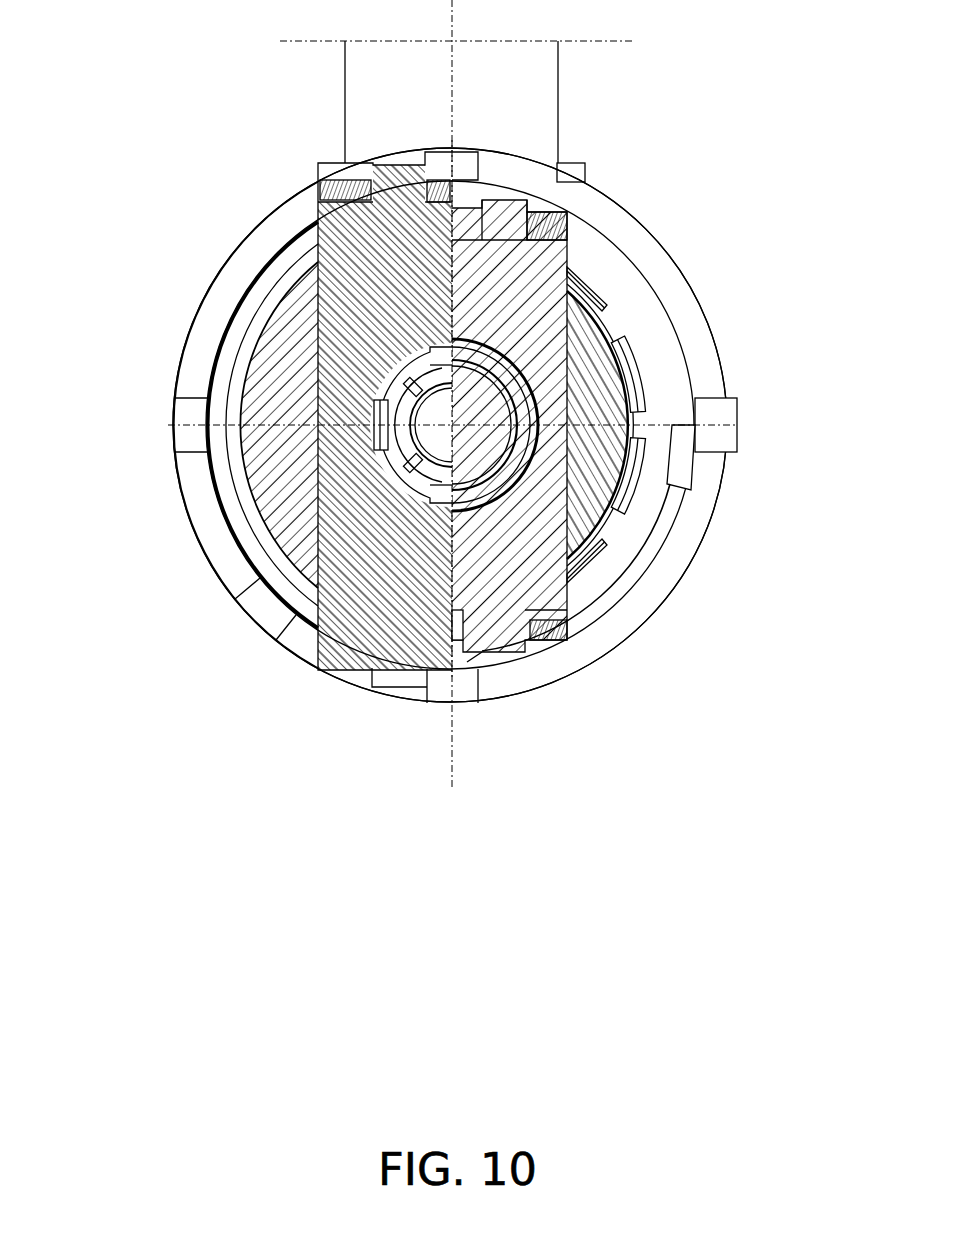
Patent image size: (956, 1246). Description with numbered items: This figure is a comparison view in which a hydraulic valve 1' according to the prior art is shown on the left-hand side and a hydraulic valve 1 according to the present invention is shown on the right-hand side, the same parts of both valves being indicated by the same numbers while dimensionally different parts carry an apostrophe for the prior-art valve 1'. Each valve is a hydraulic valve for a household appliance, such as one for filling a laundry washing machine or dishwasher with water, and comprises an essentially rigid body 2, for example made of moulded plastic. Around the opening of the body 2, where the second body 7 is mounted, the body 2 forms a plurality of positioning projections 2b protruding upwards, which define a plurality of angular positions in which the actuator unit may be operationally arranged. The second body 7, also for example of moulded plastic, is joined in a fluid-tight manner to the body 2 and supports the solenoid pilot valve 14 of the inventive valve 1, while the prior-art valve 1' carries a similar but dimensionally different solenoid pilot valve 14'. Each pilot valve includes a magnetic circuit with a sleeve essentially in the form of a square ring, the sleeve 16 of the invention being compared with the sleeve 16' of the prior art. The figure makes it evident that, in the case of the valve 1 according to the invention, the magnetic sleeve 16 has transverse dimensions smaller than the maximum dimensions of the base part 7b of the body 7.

The hydraulic valve 1 is at (513, 421).
The hydraulic valve according to the prior art 1' is at (193, 366).
The body 2 is at (175, 487).
The positioning projections 2b is at (300, 212).
The second body 7 is at (268, 250).
The base part of the body 7b is at (632, 300).
The solenoid pilot valve 14 is at (677, 463).
The solenoid pilot valve according to the prior art 14' is at (211, 425).
The sleeve 16 is at (650, 425).
The sleeve according to the prior art 16' is at (252, 423).